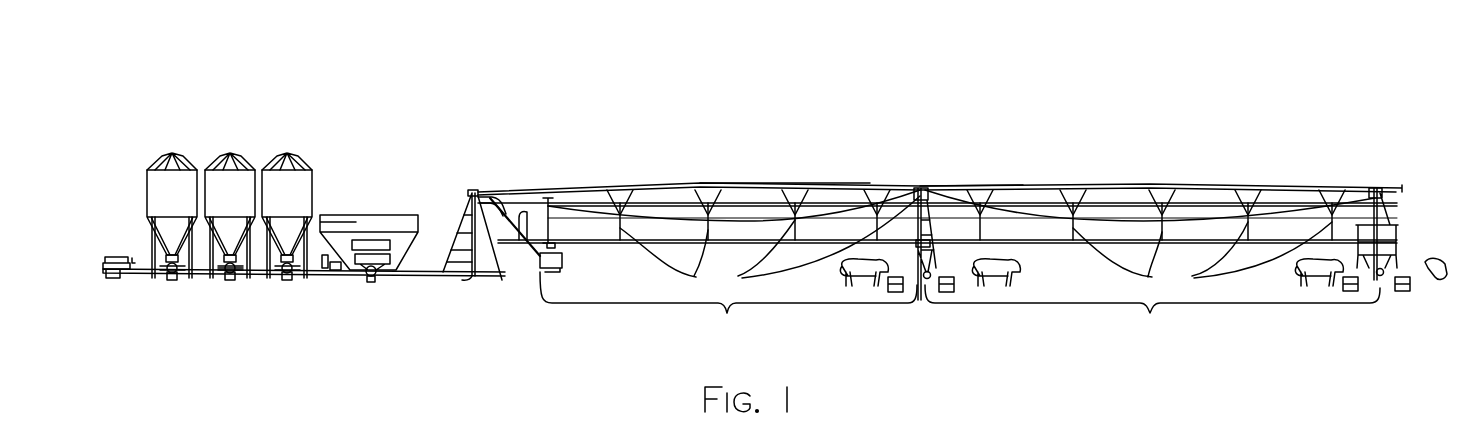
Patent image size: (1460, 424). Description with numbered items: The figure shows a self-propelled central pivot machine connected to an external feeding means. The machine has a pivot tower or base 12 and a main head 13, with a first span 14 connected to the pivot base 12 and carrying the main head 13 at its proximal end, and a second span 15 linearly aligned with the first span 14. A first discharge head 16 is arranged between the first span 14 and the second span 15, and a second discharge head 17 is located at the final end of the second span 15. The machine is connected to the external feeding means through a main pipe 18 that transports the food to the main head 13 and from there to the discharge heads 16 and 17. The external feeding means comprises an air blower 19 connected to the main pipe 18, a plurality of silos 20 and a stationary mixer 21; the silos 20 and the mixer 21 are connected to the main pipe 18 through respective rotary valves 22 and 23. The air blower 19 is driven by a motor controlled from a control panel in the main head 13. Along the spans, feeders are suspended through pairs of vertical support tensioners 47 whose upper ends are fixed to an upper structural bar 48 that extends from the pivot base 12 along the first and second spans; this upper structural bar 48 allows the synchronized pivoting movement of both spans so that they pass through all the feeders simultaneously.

The pivot tower or base 12 is at (484, 165).
The main head 13 is at (576, 172).
The first span 14 is at (728, 306).
The second span 15 is at (1186, 306).
The first discharge head 16 is at (926, 176).
The second discharge head 17 is at (1374, 158).
The main pipe 18 is at (432, 275).
The air blower 19 is at (128, 293).
The silos 20 is at (287, 153).
The stationary mixer 21 is at (371, 190).
The rotary valves 22 is at (231, 280).
The rotary valve 23 is at (371, 278).
The vertical support tensioners 47 is at (961, 238).
The upper structural bar 48 is at (1048, 125).